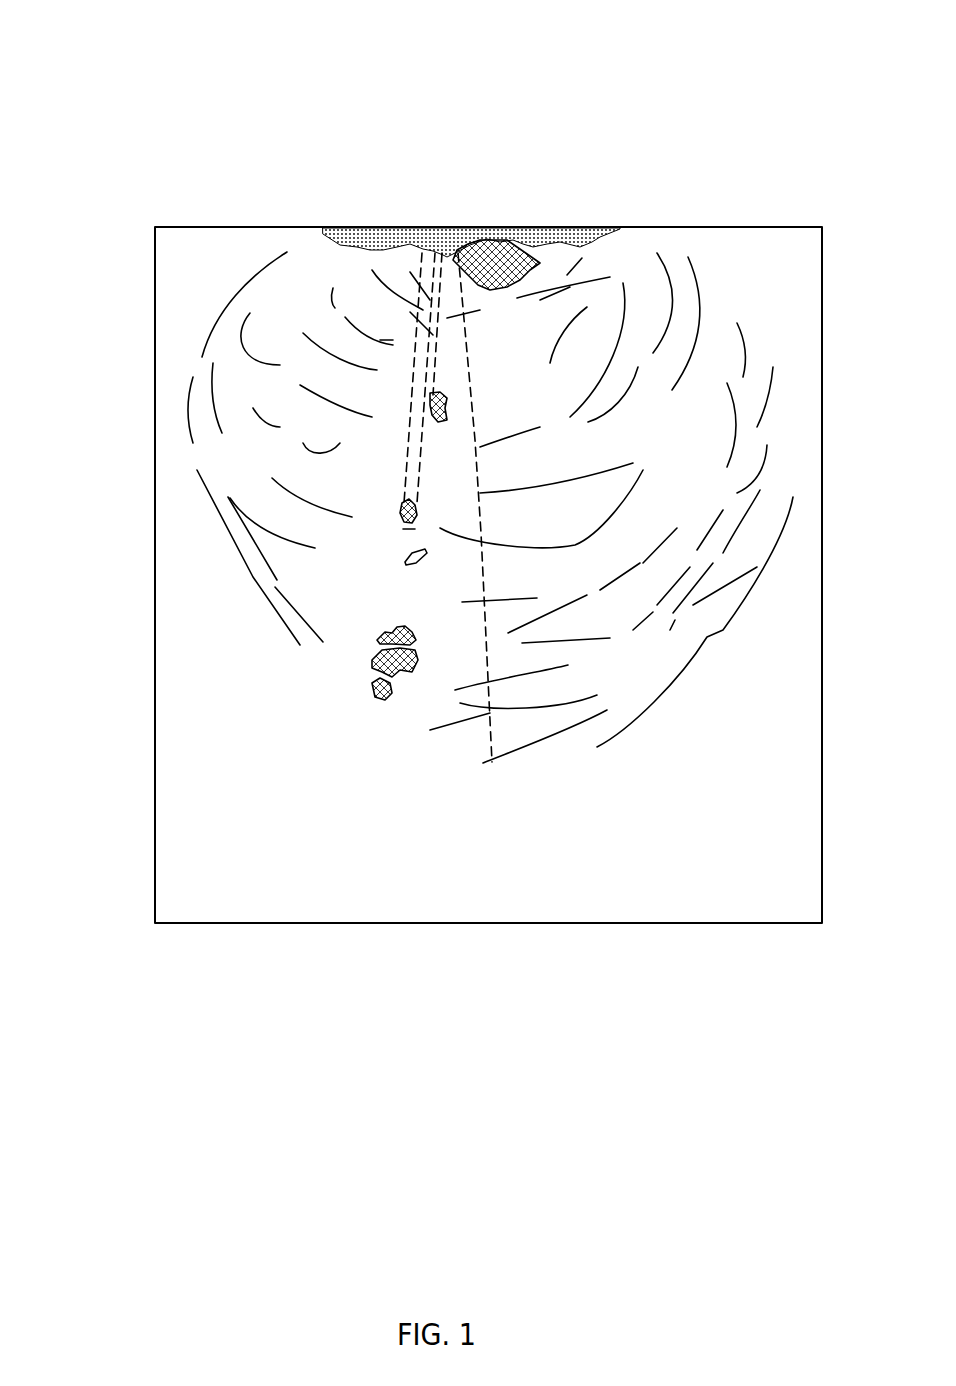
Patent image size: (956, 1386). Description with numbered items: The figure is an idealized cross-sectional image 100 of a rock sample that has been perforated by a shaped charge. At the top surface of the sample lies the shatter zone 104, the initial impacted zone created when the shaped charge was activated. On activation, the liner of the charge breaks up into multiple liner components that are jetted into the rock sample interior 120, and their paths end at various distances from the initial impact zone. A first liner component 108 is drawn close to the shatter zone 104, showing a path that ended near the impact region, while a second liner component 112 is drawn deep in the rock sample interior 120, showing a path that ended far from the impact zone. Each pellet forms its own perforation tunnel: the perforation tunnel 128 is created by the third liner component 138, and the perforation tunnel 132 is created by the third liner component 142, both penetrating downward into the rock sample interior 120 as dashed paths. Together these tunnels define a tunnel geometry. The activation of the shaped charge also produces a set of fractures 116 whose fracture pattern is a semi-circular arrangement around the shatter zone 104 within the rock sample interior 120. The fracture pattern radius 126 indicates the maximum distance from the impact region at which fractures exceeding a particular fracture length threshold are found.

The cross-sectional image 100 is at (752, 124).
The shatter zone 104 is at (418, 250).
The first liner component 108 is at (508, 253).
The second liner component 112 is at (370, 660).
The set of fractures 116 is at (257, 579).
The rock sample interior 120 is at (259, 805).
The fracture pattern radius 126 is at (482, 517).
The perforation tunnel 128 is at (457, 258).
The perforation tunnel 132 is at (433, 255).
The third liner component 138 is at (433, 400).
The third liner component 142 is at (400, 513).